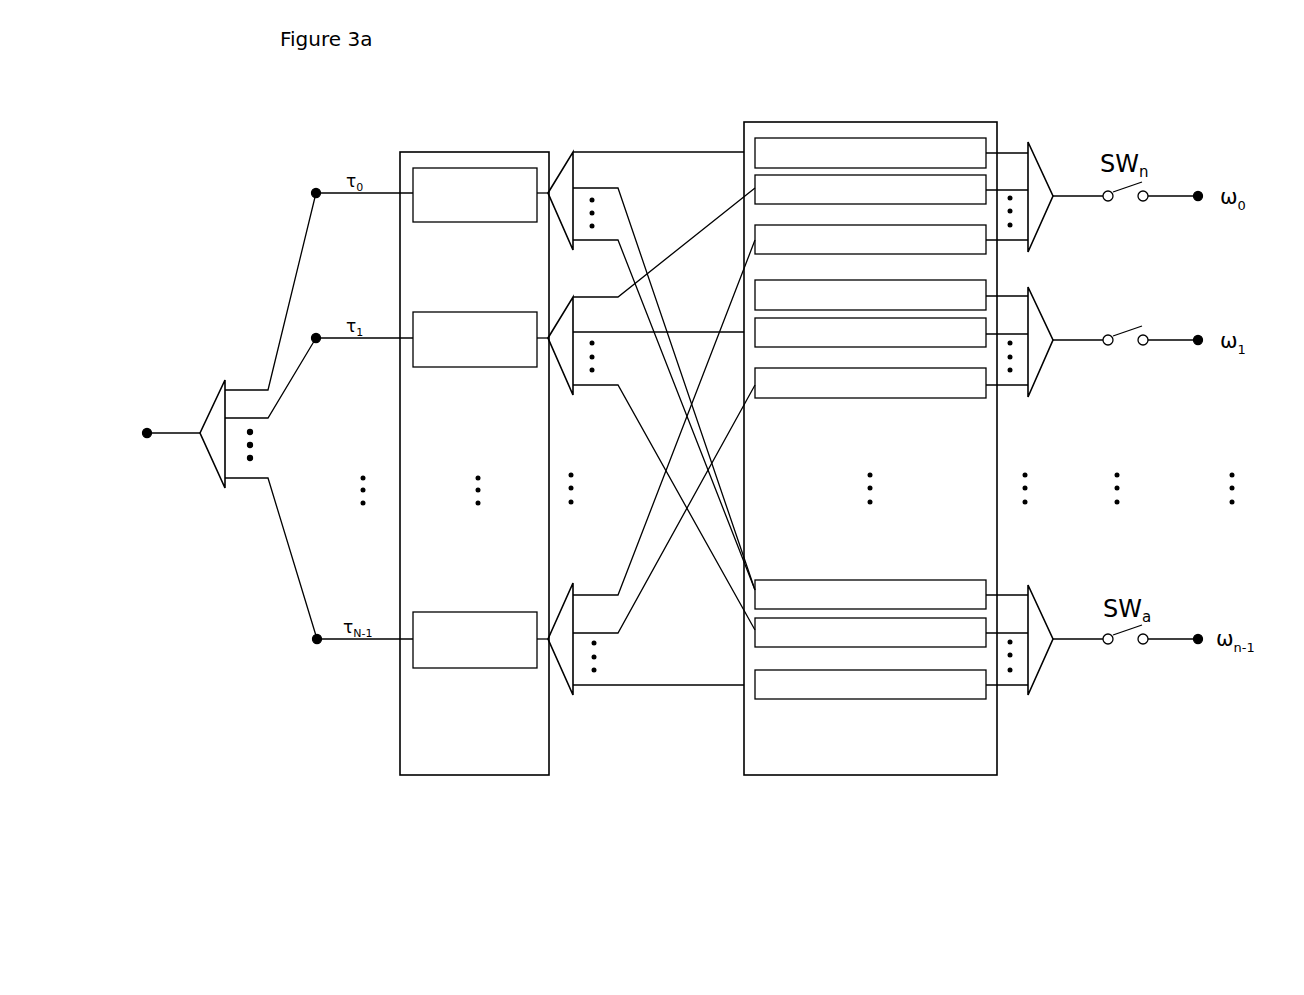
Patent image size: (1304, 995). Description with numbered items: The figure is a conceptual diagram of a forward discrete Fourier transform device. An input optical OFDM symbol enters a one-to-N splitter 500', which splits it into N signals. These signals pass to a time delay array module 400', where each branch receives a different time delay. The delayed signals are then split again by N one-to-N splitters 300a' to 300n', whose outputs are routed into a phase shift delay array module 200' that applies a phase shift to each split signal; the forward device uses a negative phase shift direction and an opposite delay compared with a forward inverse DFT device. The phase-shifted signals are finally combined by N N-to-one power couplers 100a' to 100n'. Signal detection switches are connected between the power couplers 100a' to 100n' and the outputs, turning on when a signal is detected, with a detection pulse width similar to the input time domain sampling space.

The 1:N splitter 500' is at (230, 416).
The time delay array module 400' is at (474, 445).
The 1:N splitter 300n' is at (646, 353).
The 1:N splitter 300a' is at (646, 484).
The phase shift delay array module 200' is at (870, 430).
The N:1 power coupler 100n' is at (1065, 189).
The N:1 power coupler 100a' is at (1072, 640).